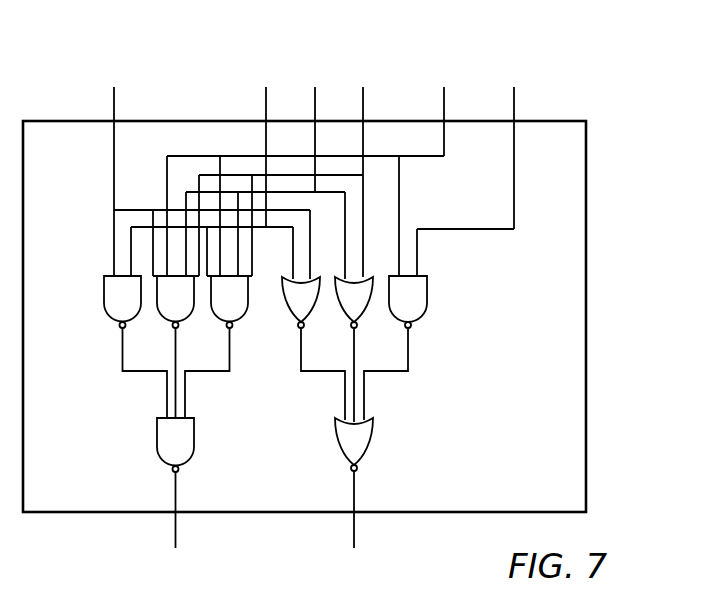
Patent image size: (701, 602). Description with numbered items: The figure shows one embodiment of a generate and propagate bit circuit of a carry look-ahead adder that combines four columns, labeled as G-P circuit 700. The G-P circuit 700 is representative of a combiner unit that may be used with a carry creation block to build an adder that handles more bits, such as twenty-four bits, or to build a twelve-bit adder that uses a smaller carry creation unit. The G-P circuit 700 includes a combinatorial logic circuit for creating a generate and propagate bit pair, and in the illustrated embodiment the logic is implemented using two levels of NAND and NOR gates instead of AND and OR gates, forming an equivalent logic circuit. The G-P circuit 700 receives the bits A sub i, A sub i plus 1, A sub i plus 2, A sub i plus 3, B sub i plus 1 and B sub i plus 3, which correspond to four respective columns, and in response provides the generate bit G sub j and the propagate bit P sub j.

The generate and propagate (G-P) circuit 700 is at (304, 320).
The input signal A(i+3) 3 is at (114, 164).
The input signal A(i+1) 1 is at (313, 122).
The input signal A(i+2) 2 is at (445, 104).